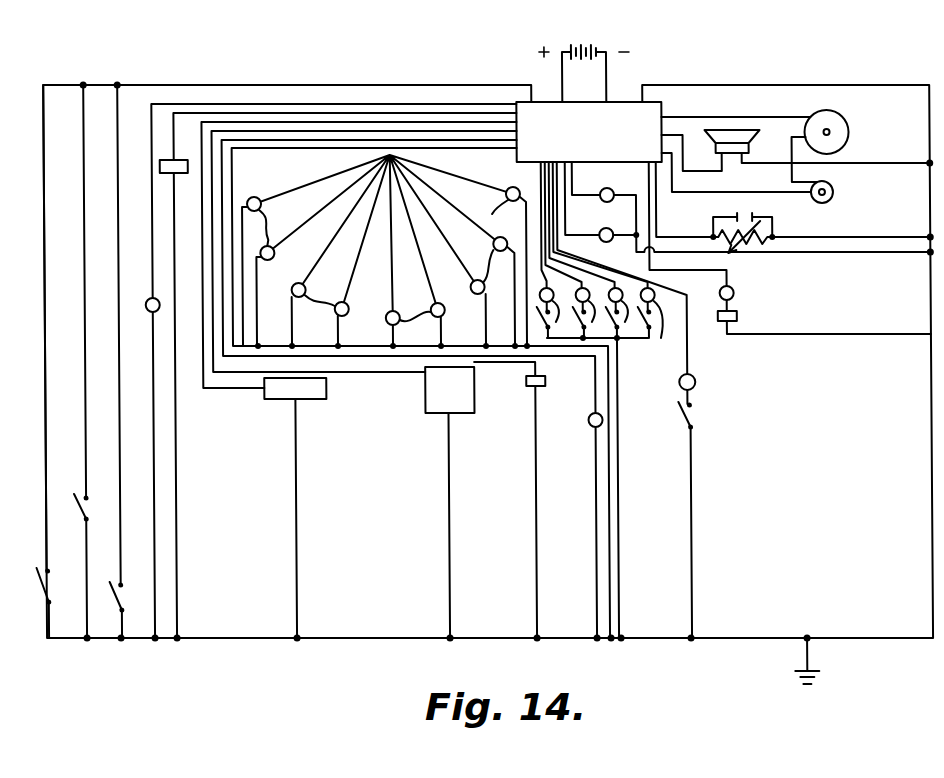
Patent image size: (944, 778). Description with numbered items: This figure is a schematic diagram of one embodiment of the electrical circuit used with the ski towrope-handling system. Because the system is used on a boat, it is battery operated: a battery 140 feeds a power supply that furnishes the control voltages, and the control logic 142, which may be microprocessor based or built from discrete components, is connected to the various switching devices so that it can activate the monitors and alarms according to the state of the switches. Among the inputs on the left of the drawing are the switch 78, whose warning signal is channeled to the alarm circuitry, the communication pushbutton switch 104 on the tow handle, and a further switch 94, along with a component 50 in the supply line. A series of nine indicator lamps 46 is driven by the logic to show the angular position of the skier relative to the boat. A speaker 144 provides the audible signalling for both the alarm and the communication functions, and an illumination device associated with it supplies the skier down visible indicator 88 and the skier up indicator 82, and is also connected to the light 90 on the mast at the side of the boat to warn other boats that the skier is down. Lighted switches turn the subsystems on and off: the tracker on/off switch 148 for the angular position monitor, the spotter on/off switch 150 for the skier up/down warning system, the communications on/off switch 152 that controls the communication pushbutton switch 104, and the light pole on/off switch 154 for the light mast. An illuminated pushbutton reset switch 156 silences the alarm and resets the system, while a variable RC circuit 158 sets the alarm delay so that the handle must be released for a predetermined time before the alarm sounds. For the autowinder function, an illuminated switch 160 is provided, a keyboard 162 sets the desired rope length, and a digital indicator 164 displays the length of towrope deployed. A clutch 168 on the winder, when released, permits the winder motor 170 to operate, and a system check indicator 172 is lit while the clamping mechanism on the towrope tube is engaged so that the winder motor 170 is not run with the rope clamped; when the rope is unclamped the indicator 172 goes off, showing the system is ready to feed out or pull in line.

The battery 140 is at (598, 40).
The control logic 142 is at (626, 102).
The speaker 144 is at (733, 128).
The winder motor 170 is at (842, 128).
The clutch 168 is at (834, 186).
The variable RC circuit 158 is at (774, 228).
The pushbutton reset switch 156 is at (737, 297).
The skier up indicator 82 is at (603, 189).
The skier down visible indicator 88 is at (606, 216).
The indicator lamps 46 is at (386, 252).
The fuse 50 is at (186, 175).
The light 90 is at (148, 311).
The tracker on/off switch 148 is at (561, 313).
The spotter on/off switch 150 is at (596, 313).
The communications on/off switch 152 is at (628, 313).
The light pole on/off switch 154 is at (657, 327).
The autowinder switch 160 is at (693, 418).
The digital indicator 164 is at (325, 390).
The keyboard 162 is at (473, 401).
The system check indicator 172 is at (587, 424).
The switch 94 is at (86, 512).
The switch 78 is at (64, 589).
The communication pushbutton switch 104 is at (120, 598).